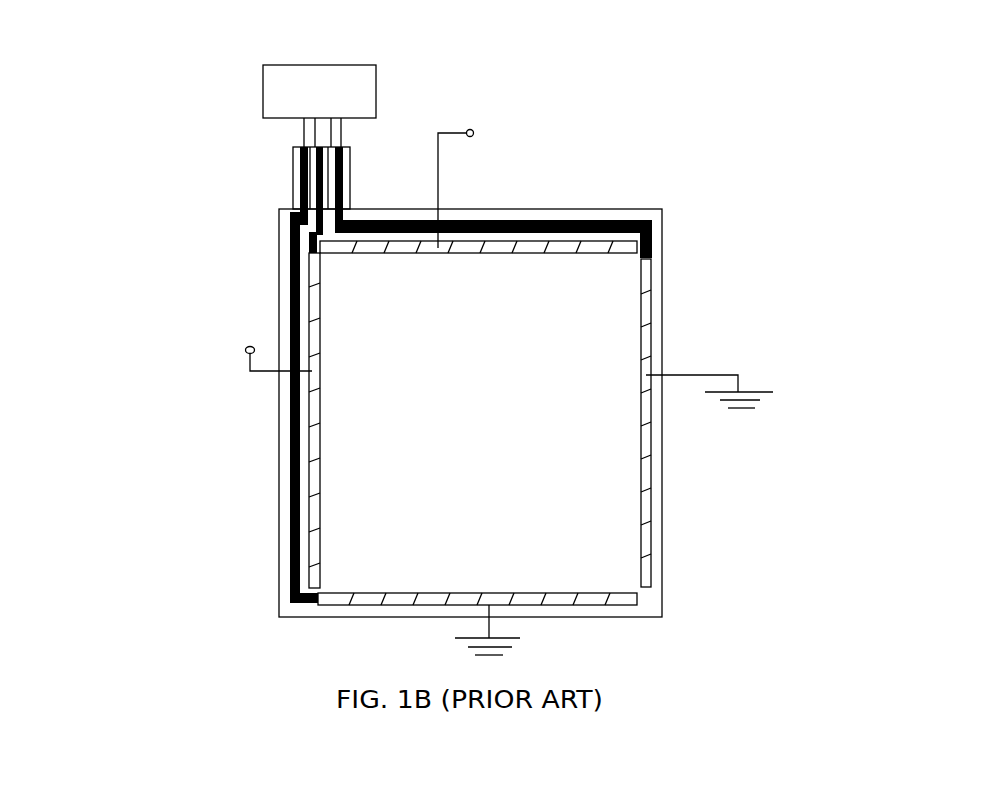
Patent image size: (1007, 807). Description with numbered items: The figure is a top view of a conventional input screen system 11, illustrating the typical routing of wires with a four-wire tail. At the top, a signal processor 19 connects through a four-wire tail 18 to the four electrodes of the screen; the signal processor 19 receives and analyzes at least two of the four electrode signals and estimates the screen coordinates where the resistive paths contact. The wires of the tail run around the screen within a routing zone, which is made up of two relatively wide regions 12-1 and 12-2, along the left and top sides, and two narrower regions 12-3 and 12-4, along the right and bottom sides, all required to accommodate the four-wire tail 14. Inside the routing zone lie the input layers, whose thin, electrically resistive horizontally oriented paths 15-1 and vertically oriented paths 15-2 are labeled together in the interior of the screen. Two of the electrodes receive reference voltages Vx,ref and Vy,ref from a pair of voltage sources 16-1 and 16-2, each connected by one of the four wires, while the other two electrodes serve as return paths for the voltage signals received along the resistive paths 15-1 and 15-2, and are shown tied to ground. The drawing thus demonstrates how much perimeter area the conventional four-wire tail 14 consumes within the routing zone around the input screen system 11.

The input screen system 11 is at (359, 310).
The signal processor 19 is at (274, 91).
The four-wire tail 18 is at (261, 168).
The four-wire tail 14 is at (337, 163).
The first wide region of routing zone 12-1 is at (251, 420).
The second wide region of routing zone 12-2 is at (478, 205).
The first narrower region of routing zone 12-3 is at (743, 423).
The second narrower region of routing zone 12-4 is at (435, 624).
The voltage source 16-1 is at (238, 333).
The voltage source 16-2 is at (493, 161).
The horizontally oriented electrically resistive paths 15-1 is at (707, 298).
The vertically oriented electrically resistive paths 15-2 is at (778, 291).